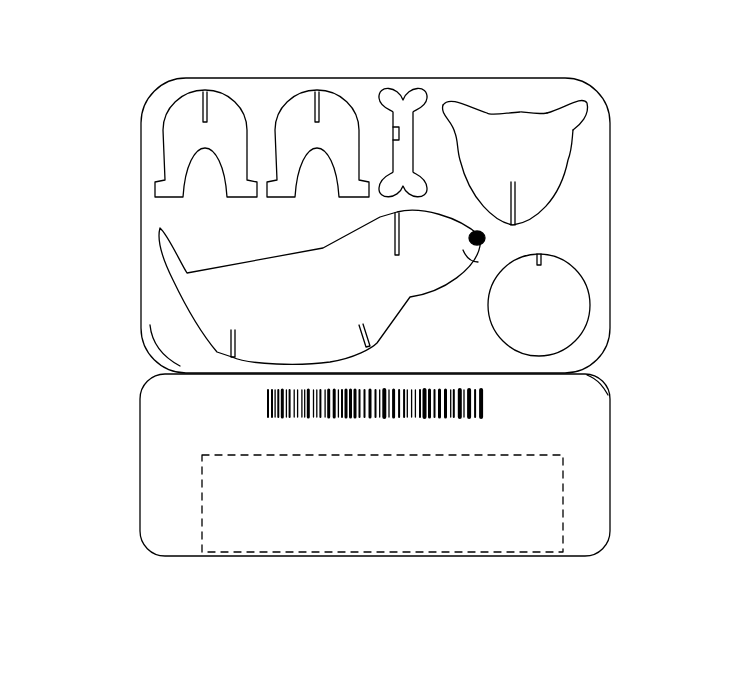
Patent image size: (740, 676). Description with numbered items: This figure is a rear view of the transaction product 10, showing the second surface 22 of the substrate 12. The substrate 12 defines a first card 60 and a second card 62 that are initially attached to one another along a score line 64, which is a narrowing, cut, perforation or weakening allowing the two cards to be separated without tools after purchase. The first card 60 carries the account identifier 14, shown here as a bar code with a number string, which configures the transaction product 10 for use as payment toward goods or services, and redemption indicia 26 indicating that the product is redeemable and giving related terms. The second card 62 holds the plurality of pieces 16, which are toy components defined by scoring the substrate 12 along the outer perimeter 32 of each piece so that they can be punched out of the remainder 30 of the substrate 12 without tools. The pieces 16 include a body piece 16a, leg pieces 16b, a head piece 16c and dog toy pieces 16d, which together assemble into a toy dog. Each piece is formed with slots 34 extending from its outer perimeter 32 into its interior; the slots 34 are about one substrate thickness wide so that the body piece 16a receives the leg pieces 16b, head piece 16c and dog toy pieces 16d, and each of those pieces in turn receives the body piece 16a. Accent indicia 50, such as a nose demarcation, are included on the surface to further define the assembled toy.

The transaction product 10 is at (100, 92).
The substrate 12 is at (150, 213).
The account identifier 14 is at (507, 415).
The plurality of pieces 16 is at (327, 107).
The body piece 16a is at (187, 289).
The leg pieces 16b is at (183, 112).
The head piece 16c is at (587, 117).
The dog toy pieces 16d is at (447, 103).
The second surface 22 is at (155, 330).
The redemption indicia 26 is at (567, 518).
The remainder of substrate 30 is at (598, 162).
The outer perimeter 32 is at (575, 95).
The slots 34 is at (228, 105).
The accent indicia 50 is at (497, 238).
The first card 60 is at (140, 525).
The second card 62 is at (140, 228).
The score line 64 is at (540, 378).